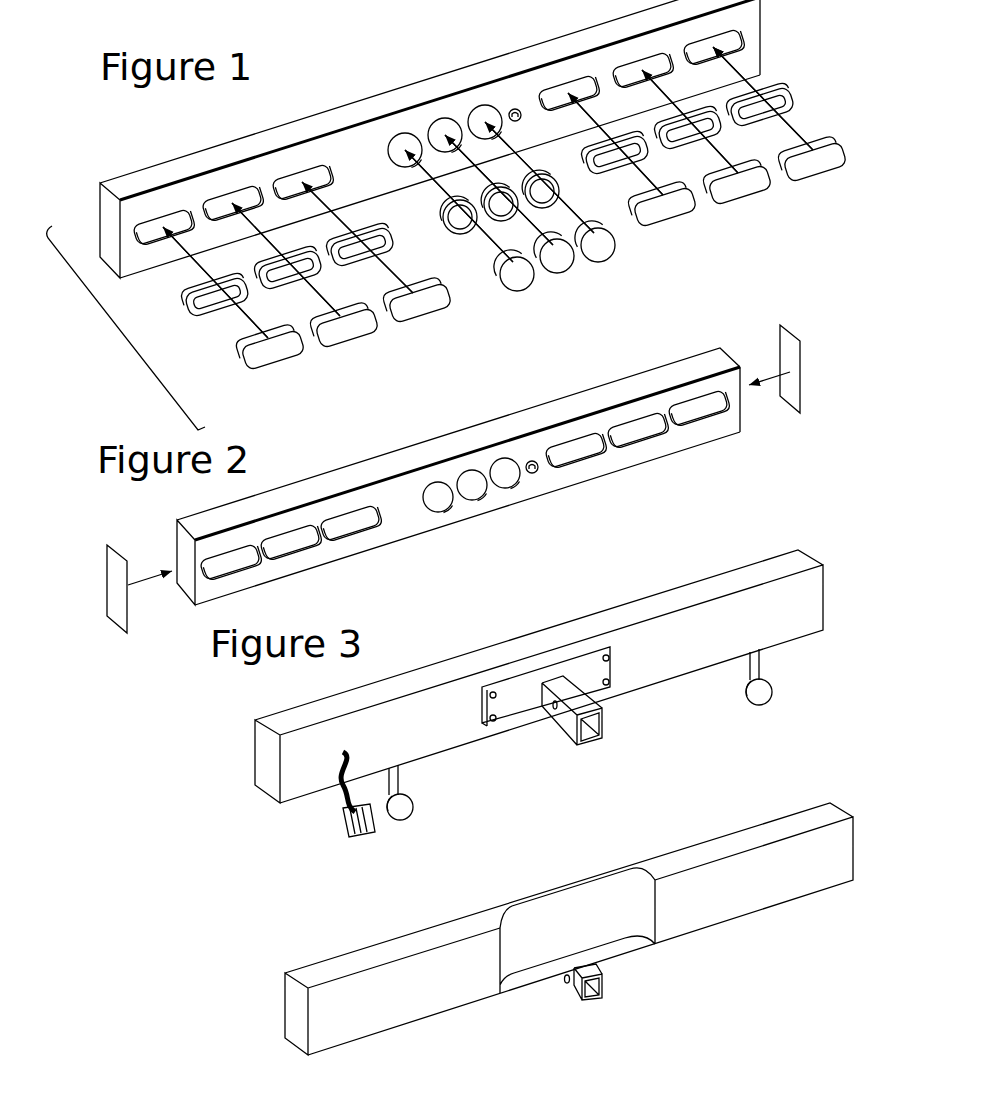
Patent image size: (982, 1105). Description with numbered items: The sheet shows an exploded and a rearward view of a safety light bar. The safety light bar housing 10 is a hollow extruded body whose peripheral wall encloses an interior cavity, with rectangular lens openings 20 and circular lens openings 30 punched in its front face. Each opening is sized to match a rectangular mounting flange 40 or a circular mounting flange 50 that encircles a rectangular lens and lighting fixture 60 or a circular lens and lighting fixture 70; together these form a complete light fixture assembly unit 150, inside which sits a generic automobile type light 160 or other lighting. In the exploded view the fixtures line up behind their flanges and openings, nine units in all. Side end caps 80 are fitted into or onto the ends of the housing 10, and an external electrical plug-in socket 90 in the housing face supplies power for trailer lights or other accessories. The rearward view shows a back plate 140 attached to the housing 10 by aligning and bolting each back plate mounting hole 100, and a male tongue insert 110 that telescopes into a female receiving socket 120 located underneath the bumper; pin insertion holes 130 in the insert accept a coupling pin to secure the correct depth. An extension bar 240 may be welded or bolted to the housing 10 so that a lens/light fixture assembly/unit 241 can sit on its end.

In FIG. 1, the safety light bar housing 10 is at (151, 159).
In FIG. 2, the safety light bar housing 10 is at (458, 476).
In FIG. 1, the rectangular lens openings 20 is at (232, 186).
In FIG. 2, the rectangular lens openings 20 is at (465, 485).
In FIG. 1, the circular lens openings 30 is at (399, 132).
In FIG. 2, the circular lens openings 30 is at (471, 485).
In FIG. 1, the rectangular mounting flange 40 is at (184, 305).
In FIG. 1, the circular mounting flange 50 is at (441, 212).
In FIG. 1, the rectangular lens and lighting fixture 60 is at (234, 362).
In FIG. 1, the circular lens and lighting fixture 70 is at (528, 294).
In FIG. 2, the side end caps 80 is at (113, 546).
In FIG. 1, the external electrical plug-in socket 90 is at (513, 104).
In FIG. 2, the external electrical plug-in socket 90 is at (527, 457).
In FIG. 3, the back plate mounting hole 100 is at (486, 697).
In FIG. 3, the male tongue insert 110 is at (604, 719).
In FIG. 3, the female receiving socket 120 is at (604, 980).
In FIG. 3, the pin insertion holes 130 is at (568, 984).
In FIG. 3, the back plate 140 is at (540, 661).
In FIG. 1, the complete light fixture assembly unit 150 is at (102, 339).
In FIG. 3, the generic automobile type light 160 is at (341, 820).
In FIG. 3, the extension bar 240 is at (414, 777).
In FIG. 3, the lens/light fixture assembly/unit 241 is at (397, 823).